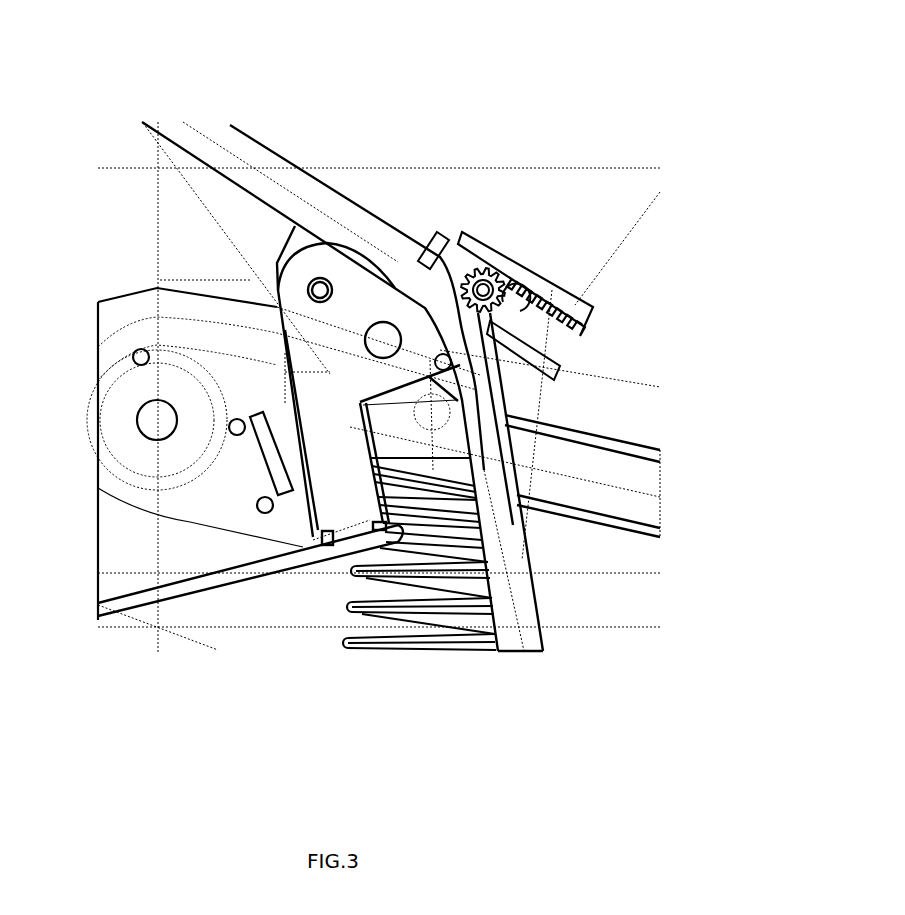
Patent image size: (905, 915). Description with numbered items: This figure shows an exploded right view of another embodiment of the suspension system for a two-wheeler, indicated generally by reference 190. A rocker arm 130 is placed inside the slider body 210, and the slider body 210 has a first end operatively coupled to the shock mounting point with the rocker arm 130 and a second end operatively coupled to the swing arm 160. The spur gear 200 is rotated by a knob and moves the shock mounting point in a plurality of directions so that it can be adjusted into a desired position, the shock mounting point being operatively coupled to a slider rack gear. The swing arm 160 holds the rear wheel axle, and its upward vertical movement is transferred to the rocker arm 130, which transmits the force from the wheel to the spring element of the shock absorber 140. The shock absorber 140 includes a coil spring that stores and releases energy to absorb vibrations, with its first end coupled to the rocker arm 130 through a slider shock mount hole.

The seat adjustment mechanism 190 is at (546, 42).
The rocker arm 130 is at (322, 243).
The spur gear 200 is at (490, 255).
The slider body 210 is at (548, 280).
The swing arm 160 is at (658, 485).
The shock absorber 140 is at (470, 612).